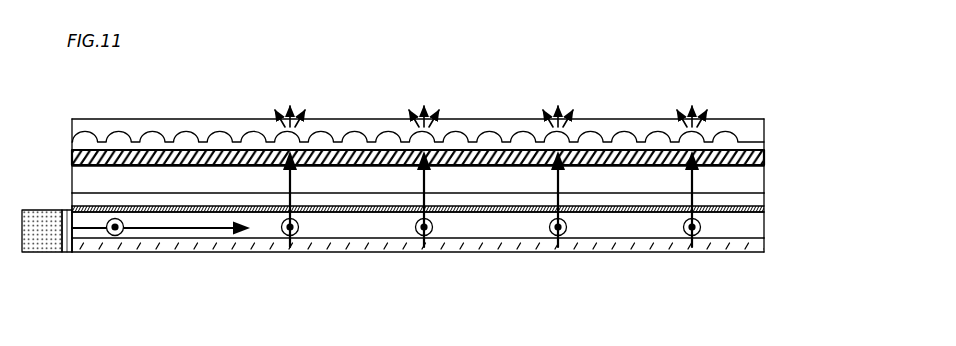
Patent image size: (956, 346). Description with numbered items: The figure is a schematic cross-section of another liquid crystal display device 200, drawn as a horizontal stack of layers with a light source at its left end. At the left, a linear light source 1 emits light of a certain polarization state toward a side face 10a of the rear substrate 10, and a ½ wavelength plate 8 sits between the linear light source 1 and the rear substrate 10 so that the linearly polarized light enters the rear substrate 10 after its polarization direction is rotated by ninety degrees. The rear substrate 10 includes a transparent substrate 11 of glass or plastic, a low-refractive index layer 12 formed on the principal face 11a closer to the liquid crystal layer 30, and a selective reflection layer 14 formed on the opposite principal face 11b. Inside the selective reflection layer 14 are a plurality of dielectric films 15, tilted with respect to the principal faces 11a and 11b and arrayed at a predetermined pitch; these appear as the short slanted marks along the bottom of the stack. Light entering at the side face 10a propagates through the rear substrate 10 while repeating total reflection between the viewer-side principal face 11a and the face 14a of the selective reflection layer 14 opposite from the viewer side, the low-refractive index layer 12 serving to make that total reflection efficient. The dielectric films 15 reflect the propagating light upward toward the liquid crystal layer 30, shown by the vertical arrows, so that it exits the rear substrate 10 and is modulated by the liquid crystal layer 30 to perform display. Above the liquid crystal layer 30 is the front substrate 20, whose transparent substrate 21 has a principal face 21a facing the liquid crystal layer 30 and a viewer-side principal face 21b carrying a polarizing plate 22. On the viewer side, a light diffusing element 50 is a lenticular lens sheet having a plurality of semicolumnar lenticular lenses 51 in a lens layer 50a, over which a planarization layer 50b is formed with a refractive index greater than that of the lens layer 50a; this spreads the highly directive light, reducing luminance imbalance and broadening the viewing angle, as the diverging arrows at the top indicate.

The liquid crystal display device 200 is at (758, 90).
The linear light source 1 is at (50, 254).
The ½ wavelength plate 8 is at (68, 254).
The rear substrate 10 is at (473, 204).
The side face 10a is at (77, 217).
The transparent substrate 11 is at (443, 263).
The principal face 11a is at (594, 215).
The principal face 11b is at (634, 236).
The low-refractive index layer 12 is at (757, 209).
The selective reflection layer 14 is at (455, 276).
The face 14a is at (383, 253).
The dielectric films 15 is at (465, 247).
The front substrate 20 is at (473, 134).
The transparent substrate 21 is at (458, 134).
The principal face 21a is at (634, 189).
The principal face 21b is at (611, 167).
The polarizing plate 22 is at (765, 160).
The liquid crystal layer 30 is at (757, 200).
The light diffusing element 50 is at (442, 106).
The lens layer 50a is at (187, 140).
The planarization layer 50b is at (163, 125).
The lenticular lenses 51 is at (231, 129).